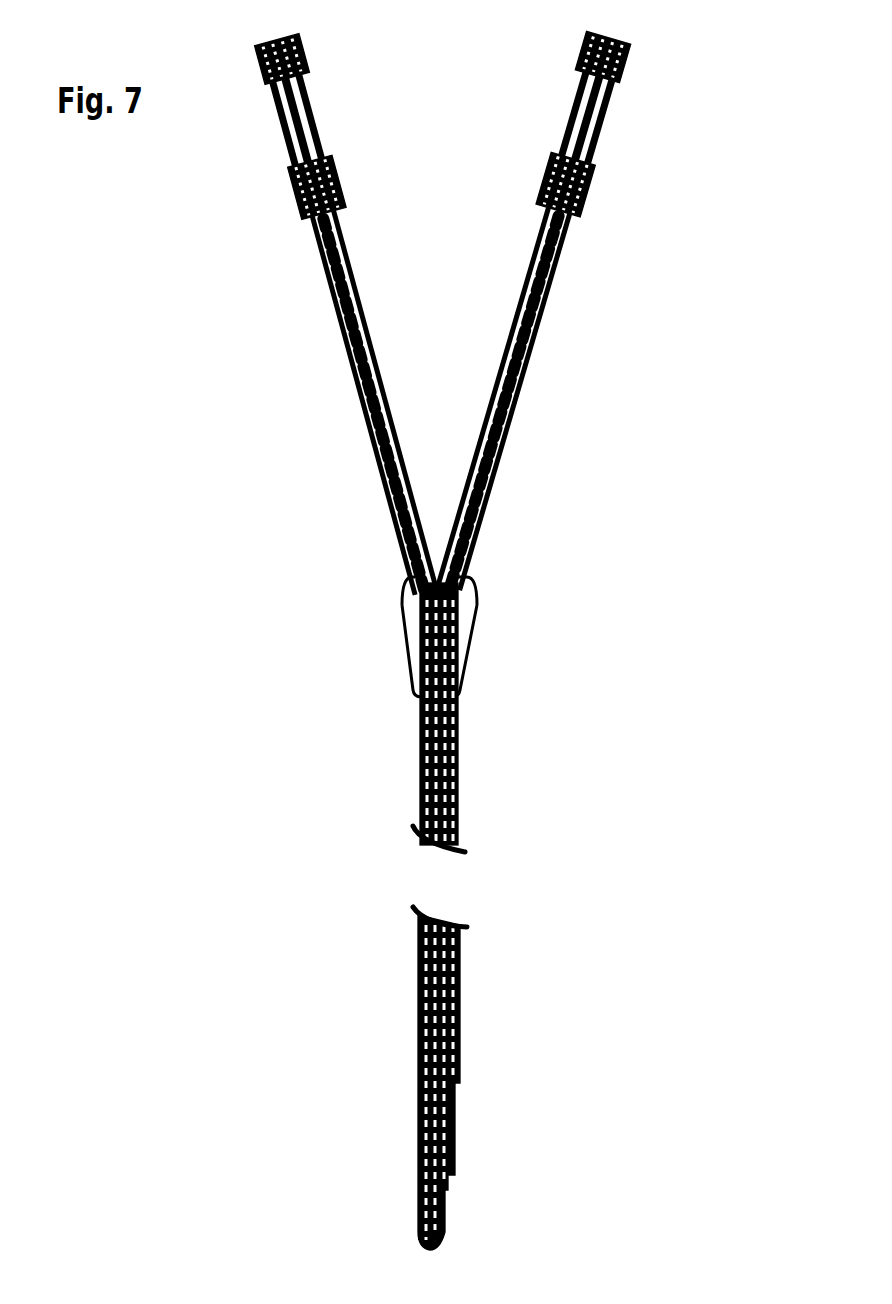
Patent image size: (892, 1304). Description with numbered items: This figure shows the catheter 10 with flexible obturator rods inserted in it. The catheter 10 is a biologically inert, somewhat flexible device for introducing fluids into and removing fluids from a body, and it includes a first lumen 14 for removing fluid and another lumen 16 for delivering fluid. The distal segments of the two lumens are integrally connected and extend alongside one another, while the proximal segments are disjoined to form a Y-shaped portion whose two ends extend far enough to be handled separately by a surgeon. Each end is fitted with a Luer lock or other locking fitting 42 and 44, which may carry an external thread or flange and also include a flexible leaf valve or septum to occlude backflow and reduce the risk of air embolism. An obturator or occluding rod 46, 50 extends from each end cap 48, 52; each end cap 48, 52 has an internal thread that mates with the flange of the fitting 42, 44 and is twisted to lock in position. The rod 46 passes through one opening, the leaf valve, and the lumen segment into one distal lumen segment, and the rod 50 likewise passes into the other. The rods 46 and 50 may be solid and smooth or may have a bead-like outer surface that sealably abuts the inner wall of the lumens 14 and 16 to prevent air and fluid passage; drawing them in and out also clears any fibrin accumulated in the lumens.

The catheter 10 is at (568, 550).
The first lumen 14 is at (418, 1005).
The another lumen 16 is at (460, 807).
The locking fitting 42 is at (317, 187).
The locking fitting 44 is at (565, 184).
The obturator rod 46 is at (418, 975).
The end cap 48 is at (282, 59).
The obturator rod 50 is at (457, 1013).
The end cap 52 is at (602, 56).